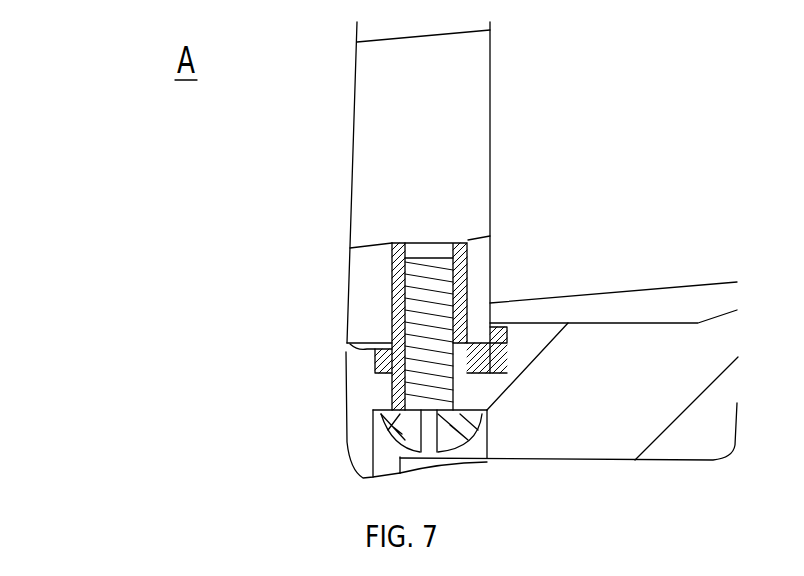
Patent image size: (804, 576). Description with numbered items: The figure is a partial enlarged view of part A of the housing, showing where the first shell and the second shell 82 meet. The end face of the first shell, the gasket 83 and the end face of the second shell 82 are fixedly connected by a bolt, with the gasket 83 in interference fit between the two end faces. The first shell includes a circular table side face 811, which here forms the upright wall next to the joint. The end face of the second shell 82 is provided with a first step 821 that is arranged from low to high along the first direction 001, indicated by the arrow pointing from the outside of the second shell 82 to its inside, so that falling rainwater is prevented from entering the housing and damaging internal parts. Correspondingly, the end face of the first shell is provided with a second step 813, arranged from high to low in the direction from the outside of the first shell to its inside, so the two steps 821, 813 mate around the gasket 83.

The circular table side face 811 is at (360, 227).
The second step 813 is at (348, 340).
The first step 821 is at (357, 358).
The second shell 82 is at (358, 400).
The gasket 83 is at (458, 342).
The first direction 001 is at (213, 389).